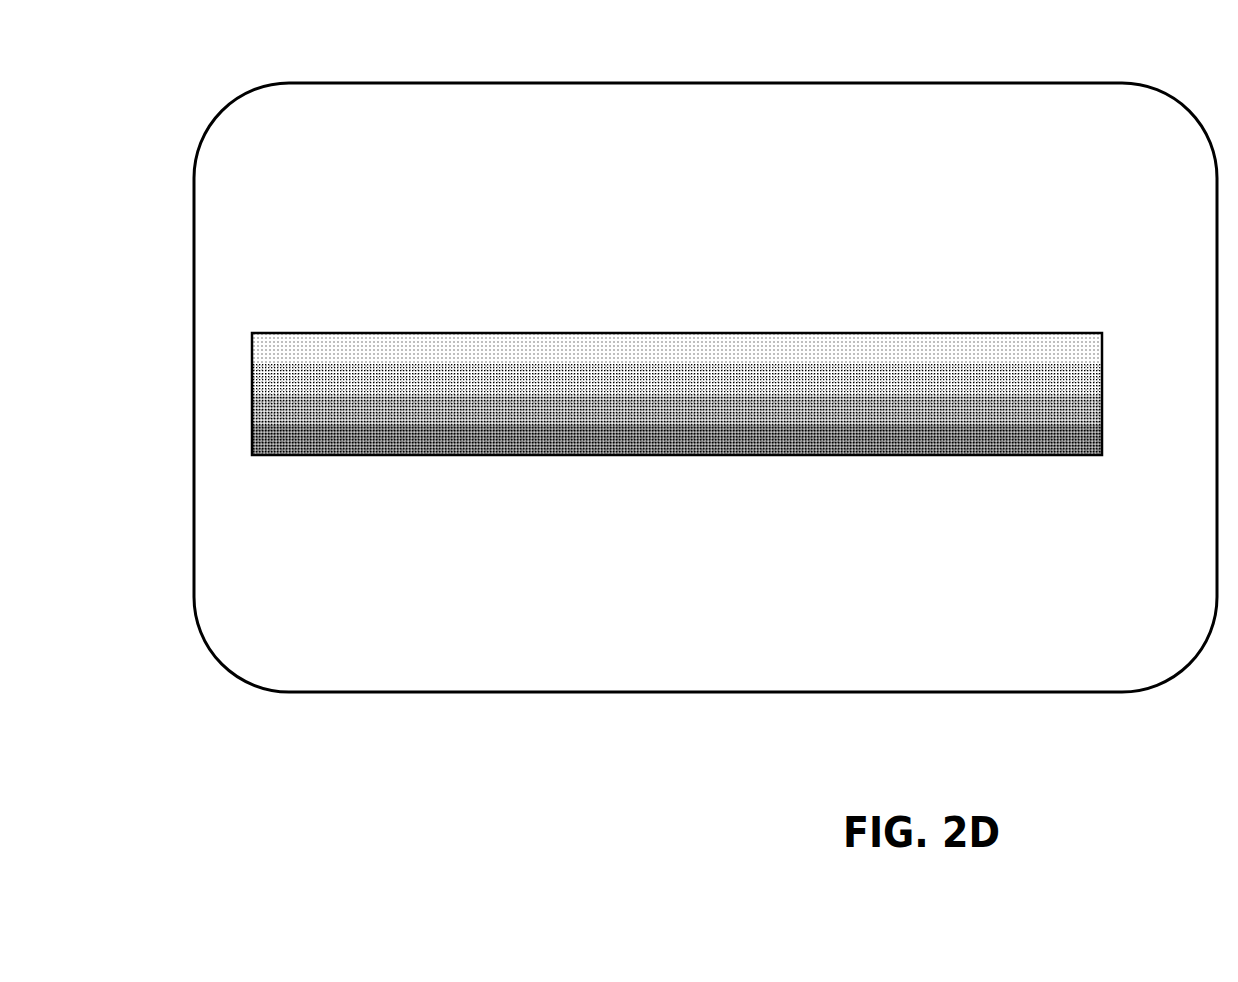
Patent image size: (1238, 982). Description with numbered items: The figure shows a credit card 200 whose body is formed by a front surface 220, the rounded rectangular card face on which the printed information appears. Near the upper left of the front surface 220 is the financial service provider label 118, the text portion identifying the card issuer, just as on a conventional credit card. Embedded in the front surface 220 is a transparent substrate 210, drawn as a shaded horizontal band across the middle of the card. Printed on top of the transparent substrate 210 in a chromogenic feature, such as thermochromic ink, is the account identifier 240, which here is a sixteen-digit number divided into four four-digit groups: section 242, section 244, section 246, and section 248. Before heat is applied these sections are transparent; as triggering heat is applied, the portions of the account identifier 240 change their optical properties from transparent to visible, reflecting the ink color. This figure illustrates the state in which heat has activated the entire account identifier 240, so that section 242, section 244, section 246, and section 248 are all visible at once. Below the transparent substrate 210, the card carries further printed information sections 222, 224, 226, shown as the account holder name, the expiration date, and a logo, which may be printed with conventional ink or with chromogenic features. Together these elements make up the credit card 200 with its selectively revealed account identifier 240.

The credit card 200 is at (684, 435).
The financial service provider label 118 is at (446, 166).
The transparent substrate 210 is at (1100, 333).
The account identifier 240 is at (749, 362).
The section of account identifier 242 is at (1005, 349).
The section of account identifier 244 is at (785, 349).
The section of account identifier 246 is at (556, 349).
The section of account identifier 248 is at (337, 349).
The printed information section 222 is at (325, 592).
The printed information section 224 is at (715, 600).
The printed information section 226 is at (988, 600).
The front surface 220 is at (632, 692).